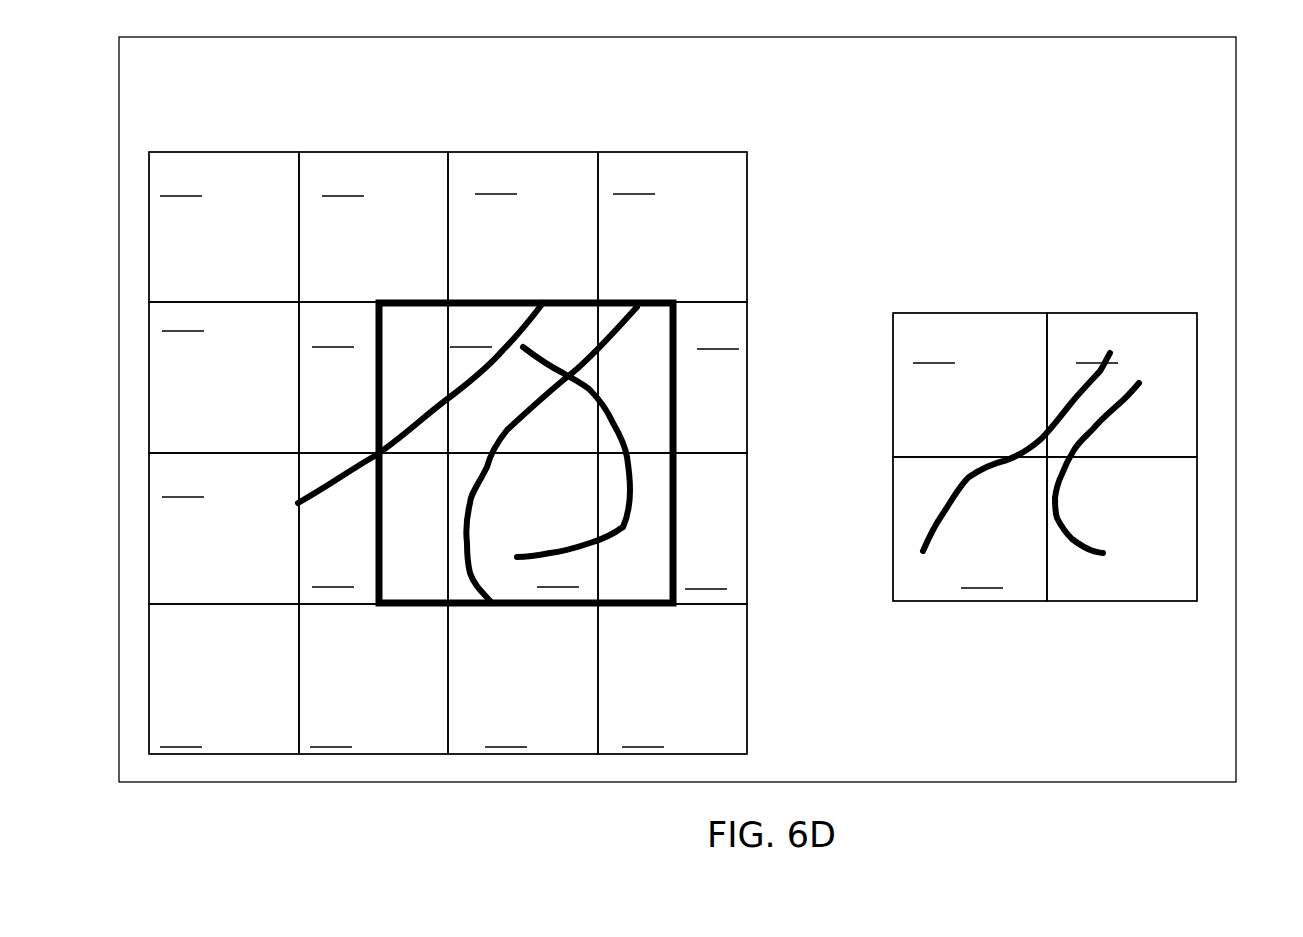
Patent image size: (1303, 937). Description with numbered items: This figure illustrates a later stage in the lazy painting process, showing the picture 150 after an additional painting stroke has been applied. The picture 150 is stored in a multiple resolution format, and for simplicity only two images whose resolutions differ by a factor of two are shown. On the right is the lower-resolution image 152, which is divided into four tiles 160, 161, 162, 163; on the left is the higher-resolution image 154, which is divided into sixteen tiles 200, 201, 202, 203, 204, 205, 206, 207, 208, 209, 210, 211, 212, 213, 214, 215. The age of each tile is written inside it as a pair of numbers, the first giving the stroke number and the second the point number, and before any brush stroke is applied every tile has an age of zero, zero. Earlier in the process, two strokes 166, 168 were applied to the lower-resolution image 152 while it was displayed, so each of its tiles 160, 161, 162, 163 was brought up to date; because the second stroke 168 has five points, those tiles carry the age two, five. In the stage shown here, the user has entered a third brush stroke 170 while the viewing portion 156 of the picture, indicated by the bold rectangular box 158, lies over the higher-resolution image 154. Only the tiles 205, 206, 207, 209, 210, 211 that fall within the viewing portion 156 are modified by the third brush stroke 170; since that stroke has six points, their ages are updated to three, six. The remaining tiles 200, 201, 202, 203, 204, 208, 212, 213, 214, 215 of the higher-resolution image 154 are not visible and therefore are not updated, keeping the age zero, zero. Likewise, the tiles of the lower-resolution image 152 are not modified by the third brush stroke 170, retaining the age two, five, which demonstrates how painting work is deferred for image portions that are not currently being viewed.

The picture 150 is at (1236, 365).
The lower-resolution image 152 is at (1023, 304).
The higher-resolution image 154 is at (369, 146).
The viewing portion 156 is at (624, 288).
The bold rectangular box 158 is at (427, 290).
The tile 160 is at (970, 385).
The tile 161 is at (1122, 385).
The tile 162 is at (970, 529).
The tile 163 is at (1122, 529).
The stroke 166 is at (1029, 428).
The second stroke 168 is at (1081, 553).
The third brush stroke 170 is at (633, 494).
The tile 200 is at (224, 227).
The tile 201 is at (373, 227).
The tile 202 is at (523, 227).
The tile 203 is at (672, 227).
The tile 204 is at (224, 377).
The tile 205 is at (373, 377).
The tile 206 is at (523, 377).
The tile 207 is at (672, 377).
The tile 208 is at (224, 528).
The tile 209 is at (373, 528).
The tile 210 is at (523, 528).
The tile 211 is at (672, 528).
The tile 212 is at (224, 679).
The tile 213 is at (373, 679).
The tile 214 is at (523, 679).
The tile 215 is at (672, 679).